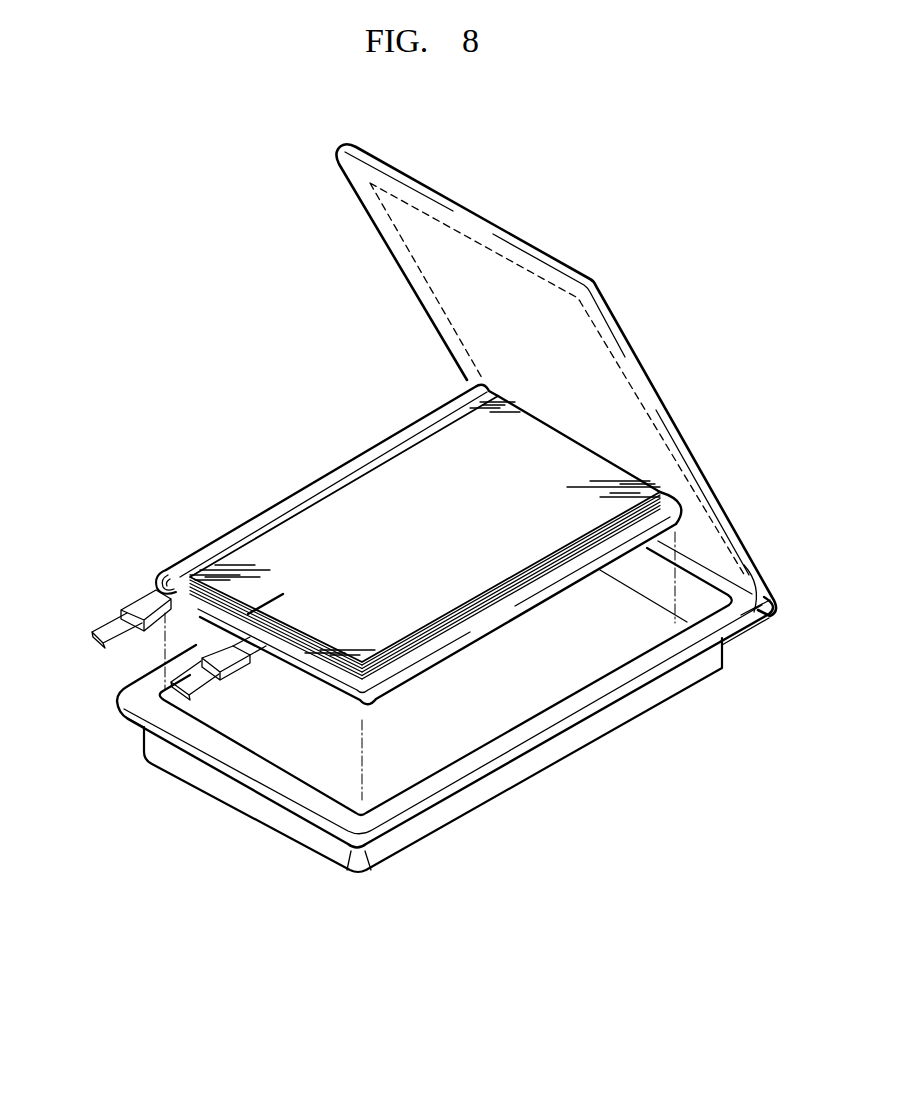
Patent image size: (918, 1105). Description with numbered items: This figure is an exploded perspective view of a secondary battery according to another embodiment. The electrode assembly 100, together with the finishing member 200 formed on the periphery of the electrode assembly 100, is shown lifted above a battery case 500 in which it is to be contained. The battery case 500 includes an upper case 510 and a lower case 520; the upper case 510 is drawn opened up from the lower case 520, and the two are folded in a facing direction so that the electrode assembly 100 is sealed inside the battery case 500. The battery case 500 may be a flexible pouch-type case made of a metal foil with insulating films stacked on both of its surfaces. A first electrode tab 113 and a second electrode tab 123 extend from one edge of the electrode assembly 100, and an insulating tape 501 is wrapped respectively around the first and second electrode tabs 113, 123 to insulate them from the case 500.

The electrode assembly 100 is at (215, 537).
The finishing member 200 is at (290, 538).
The first electrode tab 113 is at (92, 635).
The second electrode tab 123 is at (180, 699).
The insulating tape 501 is at (140, 605).
The battery case 500 is at (466, 508).
The upper case 510 is at (757, 611).
The lower case 520 is at (445, 702).